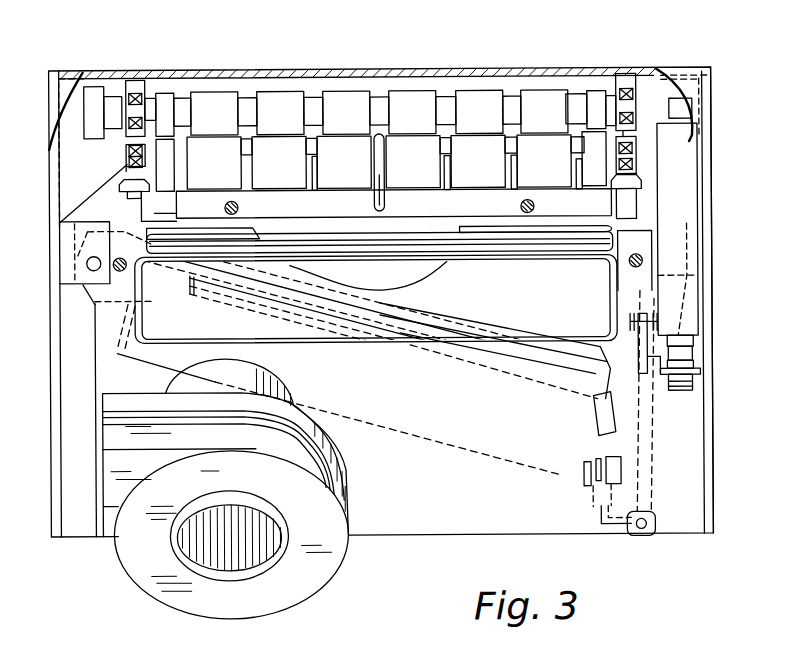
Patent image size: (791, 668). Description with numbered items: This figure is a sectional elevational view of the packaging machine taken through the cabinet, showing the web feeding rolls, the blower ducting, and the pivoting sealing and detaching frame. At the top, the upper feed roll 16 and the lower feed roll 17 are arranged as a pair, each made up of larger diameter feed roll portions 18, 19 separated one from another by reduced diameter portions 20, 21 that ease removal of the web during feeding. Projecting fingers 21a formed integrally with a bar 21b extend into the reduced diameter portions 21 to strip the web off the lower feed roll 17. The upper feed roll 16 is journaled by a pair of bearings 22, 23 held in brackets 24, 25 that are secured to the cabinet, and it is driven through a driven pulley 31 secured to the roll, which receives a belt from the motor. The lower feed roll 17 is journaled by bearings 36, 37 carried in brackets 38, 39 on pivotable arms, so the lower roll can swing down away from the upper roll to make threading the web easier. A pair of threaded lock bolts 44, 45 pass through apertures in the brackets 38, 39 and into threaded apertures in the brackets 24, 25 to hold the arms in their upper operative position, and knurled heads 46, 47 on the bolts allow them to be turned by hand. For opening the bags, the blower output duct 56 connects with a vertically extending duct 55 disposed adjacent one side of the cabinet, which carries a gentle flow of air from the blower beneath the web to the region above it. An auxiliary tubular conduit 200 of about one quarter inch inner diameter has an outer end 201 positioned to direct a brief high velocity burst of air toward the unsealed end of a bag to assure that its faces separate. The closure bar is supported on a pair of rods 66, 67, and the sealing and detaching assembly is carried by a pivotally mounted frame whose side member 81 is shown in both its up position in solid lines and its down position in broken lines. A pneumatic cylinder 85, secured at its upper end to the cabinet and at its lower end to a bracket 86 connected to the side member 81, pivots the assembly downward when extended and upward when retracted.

The upper feed roll 16 is at (294, 90).
The lower feed roll 17 is at (355, 134).
The larger diameter feed roll portions 18 is at (557, 123).
The larger diameter feed roll portions 19 is at (557, 169).
The reduced diameter portions 20 is at (243, 104).
The reduced diameter portions 21 is at (570, 172).
The projecting fingers 21a is at (453, 213).
The bar 21b is at (255, 219).
The bearing 22 is at (160, 88).
The bearing 23 is at (641, 91).
The bracket 24 is at (138, 80).
The bracket 25 is at (677, 52).
The driven pulley 31 is at (95, 88).
The bearing 36 is at (93, 192).
The bearing 37 is at (639, 152).
The bracket 38 is at (127, 153).
The bracket 39 is at (636, 148).
The threaded lock bolt 44 is at (127, 142).
The threaded lock bolt 45 is at (632, 133).
The knurled head 46 is at (140, 193).
The knurled head 47 is at (640, 187).
The vertically extending duct 55 is at (88, 457).
The blower output duct 56 is at (153, 394).
The rod 66 is at (127, 271).
The rod 67 is at (647, 256).
The side member 81 is at (586, 463).
The pneumatic cylinder 85 is at (708, 188).
The bracket 86 is at (602, 505).
The tubular conduit 200 is at (376, 207).
The outer end 201 is at (490, 189).